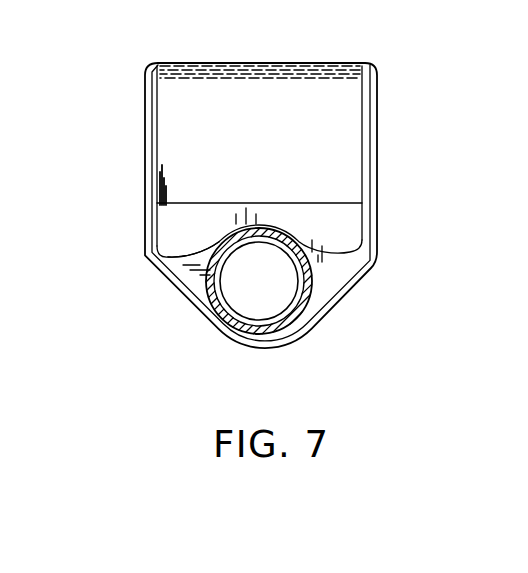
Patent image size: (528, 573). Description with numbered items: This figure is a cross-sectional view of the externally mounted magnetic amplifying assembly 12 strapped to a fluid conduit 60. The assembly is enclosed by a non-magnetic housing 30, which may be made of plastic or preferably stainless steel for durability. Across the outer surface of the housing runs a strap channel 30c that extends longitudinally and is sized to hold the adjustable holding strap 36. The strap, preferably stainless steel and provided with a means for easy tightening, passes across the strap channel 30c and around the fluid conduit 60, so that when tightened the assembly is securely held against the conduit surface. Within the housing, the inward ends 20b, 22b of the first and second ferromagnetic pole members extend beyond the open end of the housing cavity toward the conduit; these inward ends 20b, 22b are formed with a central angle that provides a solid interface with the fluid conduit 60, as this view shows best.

The magnetic amplifying assembly 12 is at (417, 92).
The non-magnetic housing 30 is at (352, 175).
The housing strap channel 30c is at (273, 73).
The adjustable holding strap 36 is at (184, 68).
The inward end of first ferromagnetic pole member 20b is at (150, 257).
The inward end of second ferromagnetic pole member 22b is at (173, 217).
The fluid conduit 60 is at (330, 287).